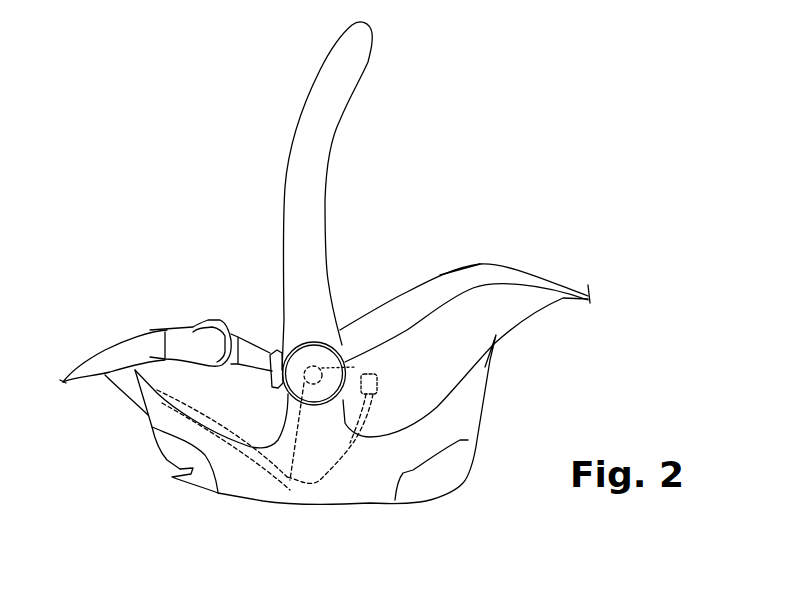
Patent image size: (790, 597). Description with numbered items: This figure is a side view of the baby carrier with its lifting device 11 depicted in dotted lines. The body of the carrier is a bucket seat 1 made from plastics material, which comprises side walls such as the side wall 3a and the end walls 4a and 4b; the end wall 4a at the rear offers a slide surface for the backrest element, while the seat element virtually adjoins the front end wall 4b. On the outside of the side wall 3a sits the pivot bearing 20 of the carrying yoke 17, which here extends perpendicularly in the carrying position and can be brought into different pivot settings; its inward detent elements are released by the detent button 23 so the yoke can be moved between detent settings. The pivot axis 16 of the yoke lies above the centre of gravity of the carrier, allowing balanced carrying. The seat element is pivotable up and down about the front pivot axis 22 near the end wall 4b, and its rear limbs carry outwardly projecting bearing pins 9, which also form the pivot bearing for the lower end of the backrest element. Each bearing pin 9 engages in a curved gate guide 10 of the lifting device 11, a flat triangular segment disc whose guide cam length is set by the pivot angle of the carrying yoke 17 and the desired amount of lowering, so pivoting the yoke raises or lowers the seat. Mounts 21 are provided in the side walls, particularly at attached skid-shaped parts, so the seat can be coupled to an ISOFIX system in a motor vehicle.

The bucket seat 1 is at (339, 368).
The side wall 3a is at (472, 337).
The end wall 4a is at (591, 298).
The end wall 4b is at (116, 385).
The bearing pins 9 is at (297, 483).
The gate guide 10 is at (373, 383).
The lifting device 11 is at (328, 442).
The pivot axis 16 is at (315, 370).
The carrying yoke 17 is at (353, 60).
The pivot bearing 20 is at (300, 357).
The mounts 21 is at (182, 473).
The pivot axis 22 is at (156, 394).
The detent button 23 is at (272, 360).